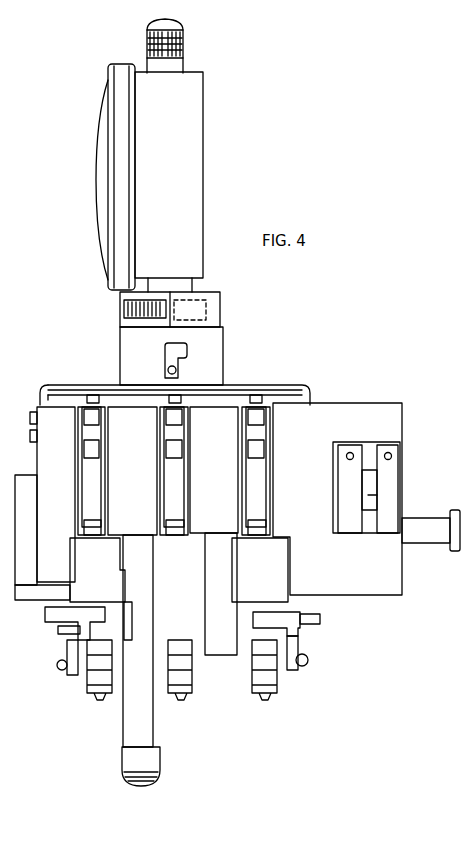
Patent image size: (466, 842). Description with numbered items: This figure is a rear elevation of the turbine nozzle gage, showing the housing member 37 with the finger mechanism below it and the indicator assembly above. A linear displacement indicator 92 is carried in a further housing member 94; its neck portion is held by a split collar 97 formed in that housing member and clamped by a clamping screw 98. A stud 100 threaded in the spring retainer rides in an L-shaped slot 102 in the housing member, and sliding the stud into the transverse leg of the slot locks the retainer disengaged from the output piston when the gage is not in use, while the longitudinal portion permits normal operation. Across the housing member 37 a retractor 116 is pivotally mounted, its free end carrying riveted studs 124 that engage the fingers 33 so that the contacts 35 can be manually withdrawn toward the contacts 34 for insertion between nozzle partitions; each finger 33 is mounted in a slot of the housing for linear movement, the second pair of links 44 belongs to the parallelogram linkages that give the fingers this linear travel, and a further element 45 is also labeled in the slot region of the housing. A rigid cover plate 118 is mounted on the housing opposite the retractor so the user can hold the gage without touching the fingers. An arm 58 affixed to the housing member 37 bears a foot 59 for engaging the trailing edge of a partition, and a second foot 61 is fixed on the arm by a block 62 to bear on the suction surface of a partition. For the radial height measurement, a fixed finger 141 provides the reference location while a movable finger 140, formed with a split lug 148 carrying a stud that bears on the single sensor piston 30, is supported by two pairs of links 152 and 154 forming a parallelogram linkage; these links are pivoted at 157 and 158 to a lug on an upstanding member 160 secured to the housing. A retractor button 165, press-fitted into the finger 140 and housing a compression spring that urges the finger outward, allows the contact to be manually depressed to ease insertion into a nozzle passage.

The sensor piston 30 is at (334, 510).
The finger 33 is at (100, 504).
The contact 34 is at (99, 700).
The contact 35 is at (175, 638).
The housing member 37 is at (142, 487).
The second pair of links 44 is at (173, 450).
The retainer 45 is at (173, 416).
The arm 58 is at (146, 723).
The foot 59 is at (128, 768).
The second foot 61 is at (50, 618).
The block 62 is at (103, 576).
The linear displacement indicator 92 is at (96, 148).
The housing member 94 is at (120, 350).
The split collar 97 is at (120, 300).
The clamping screw 98 is at (186, 328).
The stud 100 is at (168, 370).
The L-shaped slot 102 is at (166, 356).
The retractor 116 is at (283, 386).
The rigid cover plate 118 is at (310, 624).
The riveted studs 124 is at (92, 395).
The movable finger 140 is at (316, 665).
The finger 141 is at (72, 676).
The lug 148 is at (364, 505).
The links 152 is at (388, 468).
The links 154 is at (346, 479).
The pivot 157 is at (348, 452).
The pivot 158 is at (388, 452).
The upstanding member 160 is at (397, 412).
The retractor button 165 is at (441, 536).